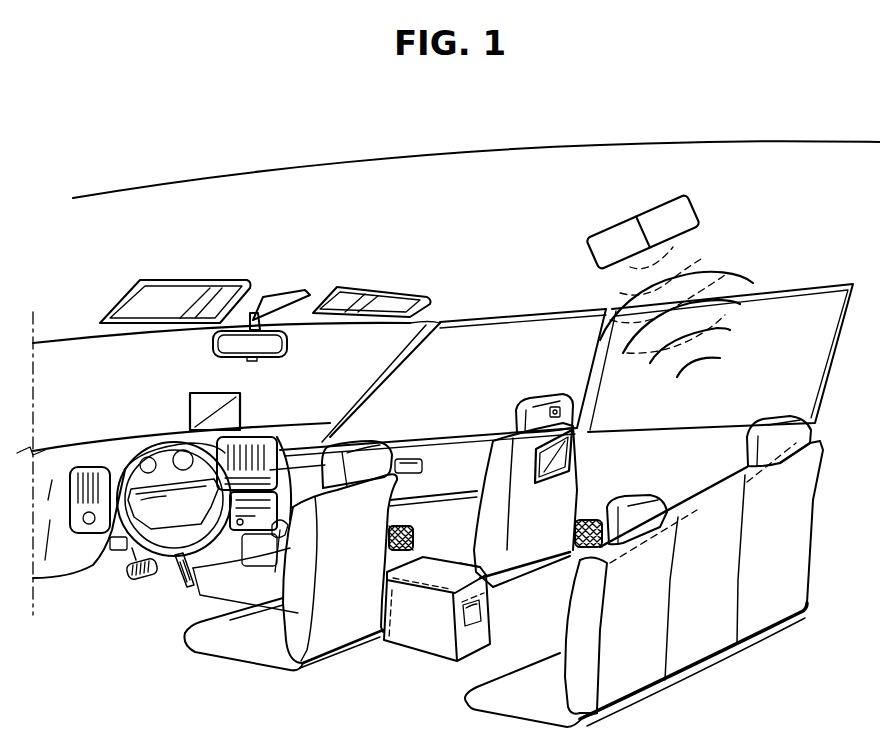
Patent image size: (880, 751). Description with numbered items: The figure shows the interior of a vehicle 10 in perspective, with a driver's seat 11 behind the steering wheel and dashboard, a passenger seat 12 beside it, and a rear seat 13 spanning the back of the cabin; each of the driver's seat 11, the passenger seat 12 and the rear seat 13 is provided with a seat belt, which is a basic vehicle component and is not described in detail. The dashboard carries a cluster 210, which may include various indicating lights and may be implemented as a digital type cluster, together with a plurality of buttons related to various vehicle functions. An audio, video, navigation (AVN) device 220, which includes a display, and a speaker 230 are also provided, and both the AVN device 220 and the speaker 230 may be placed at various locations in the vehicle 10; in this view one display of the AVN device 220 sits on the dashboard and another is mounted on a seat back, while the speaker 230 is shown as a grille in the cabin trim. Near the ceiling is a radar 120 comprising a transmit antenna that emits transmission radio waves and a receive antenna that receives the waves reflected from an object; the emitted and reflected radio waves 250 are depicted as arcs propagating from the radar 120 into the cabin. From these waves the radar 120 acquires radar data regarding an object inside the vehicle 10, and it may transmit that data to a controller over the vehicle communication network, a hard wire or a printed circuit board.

The vehicle 10 is at (464, 217).
The driver's seat 11 is at (342, 443).
The passenger seat 12 is at (538, 394).
The rear seat 13 is at (773, 423).
The radar 120 is at (692, 210).
The cluster 210 is at (85, 447).
The audio, video, navigation (AVN) device 220 is at (190, 413).
The speaker 230 is at (575, 535).
The radar waves 250 is at (578, 407).